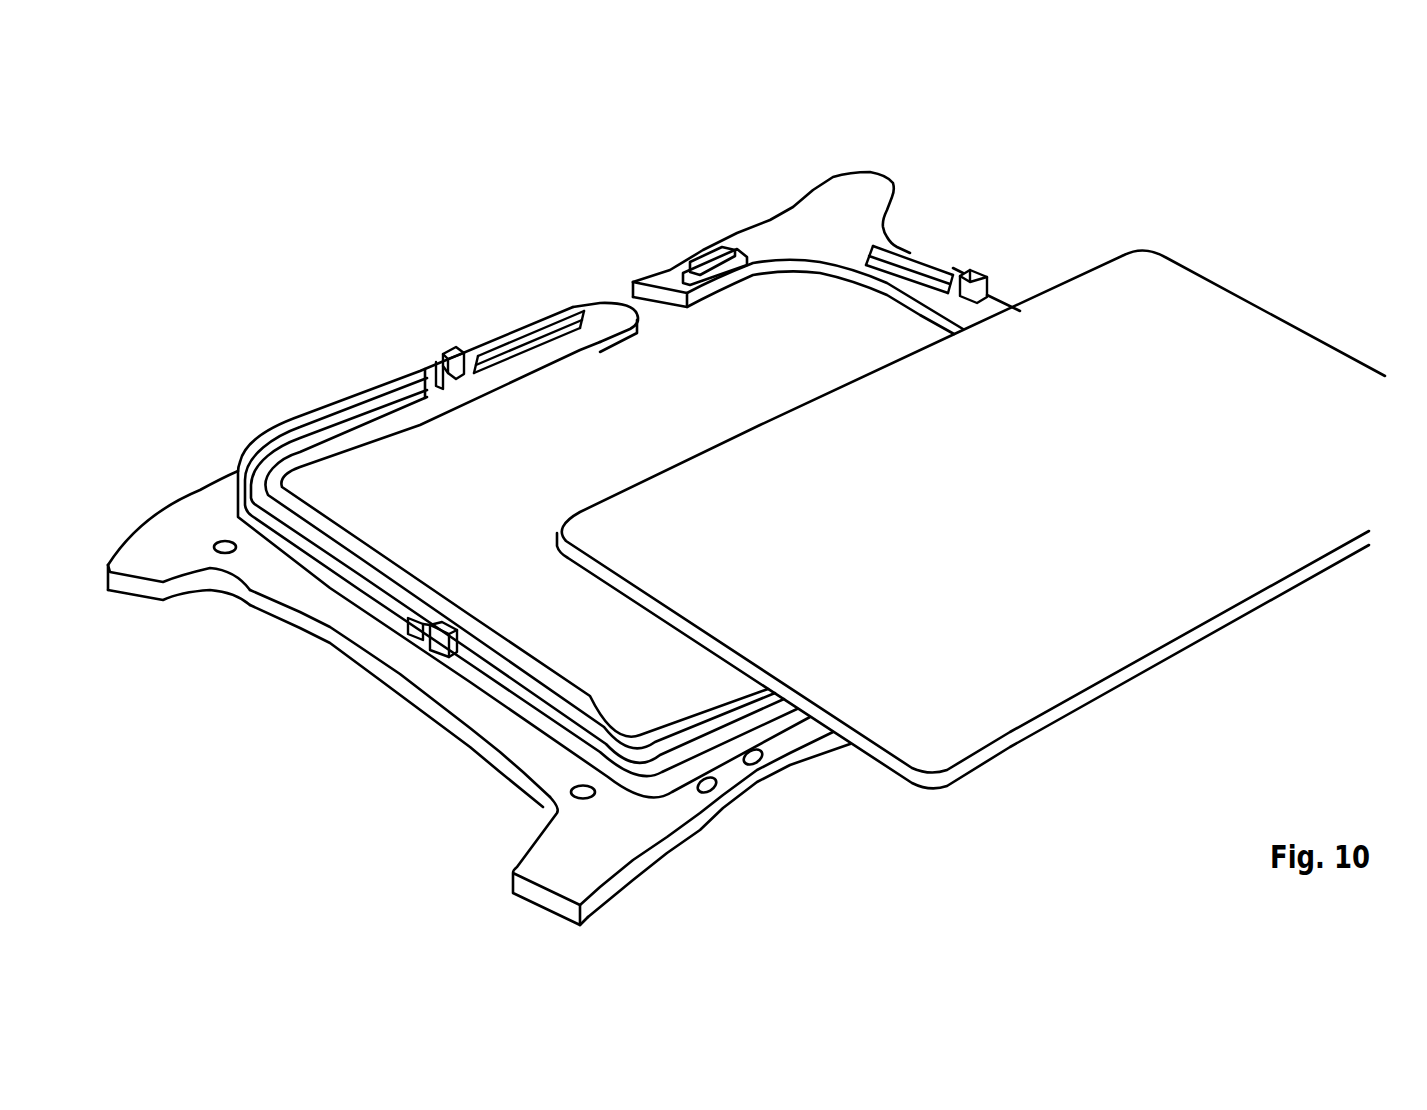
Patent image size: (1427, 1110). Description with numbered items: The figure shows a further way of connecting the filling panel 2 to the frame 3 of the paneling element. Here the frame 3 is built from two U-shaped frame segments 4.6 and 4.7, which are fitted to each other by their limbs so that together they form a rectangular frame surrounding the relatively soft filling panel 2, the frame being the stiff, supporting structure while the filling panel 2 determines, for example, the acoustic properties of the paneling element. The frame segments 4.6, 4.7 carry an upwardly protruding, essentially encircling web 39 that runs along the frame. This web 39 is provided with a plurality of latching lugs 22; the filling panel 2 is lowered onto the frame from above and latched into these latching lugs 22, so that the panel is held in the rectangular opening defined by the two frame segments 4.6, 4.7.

The filling panel 2 is at (1040, 514).
The frame 3 is at (372, 727).
The frame segment 4.6 is at (168, 575).
The frame segment 4.7 is at (863, 190).
The latching lug 22 is at (450, 352).
The web 39 is at (523, 342).